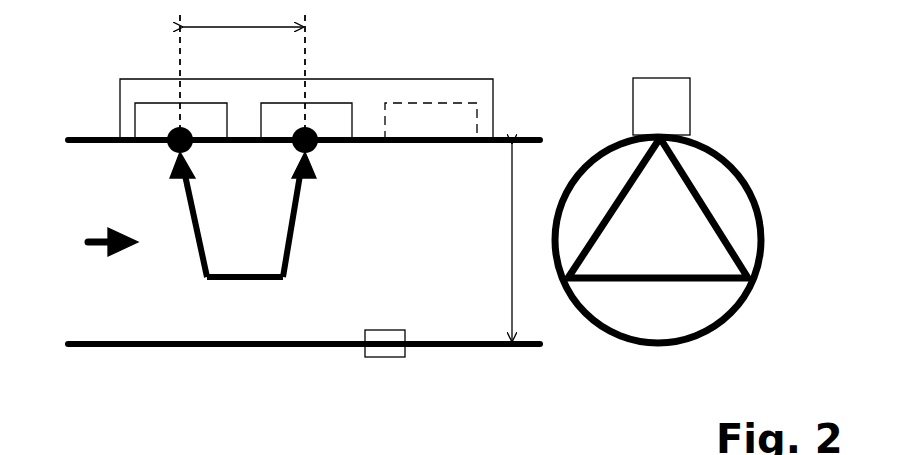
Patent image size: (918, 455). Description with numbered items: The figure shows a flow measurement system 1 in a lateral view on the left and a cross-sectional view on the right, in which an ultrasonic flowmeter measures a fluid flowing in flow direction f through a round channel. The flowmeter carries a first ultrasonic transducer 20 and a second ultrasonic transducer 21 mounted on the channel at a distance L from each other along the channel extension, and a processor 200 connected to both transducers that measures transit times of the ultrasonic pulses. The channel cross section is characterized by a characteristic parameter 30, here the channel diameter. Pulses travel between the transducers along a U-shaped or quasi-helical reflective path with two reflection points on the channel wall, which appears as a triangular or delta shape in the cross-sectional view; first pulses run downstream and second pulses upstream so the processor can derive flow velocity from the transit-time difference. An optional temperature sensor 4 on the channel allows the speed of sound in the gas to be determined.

The flow measurement system 1 is at (82, 62).
The first ultrasonic transducer 20 is at (147, 102).
The second ultrasonic transducer 21 is at (288, 101).
The processor 200 is at (430, 100).
The temperature sensor 4 is at (382, 358).
The characteristic parameter of channel 30 is at (512, 245).
The distance between ultrasonic transducers L is at (242, 65).
The flow direction f is at (95, 240).